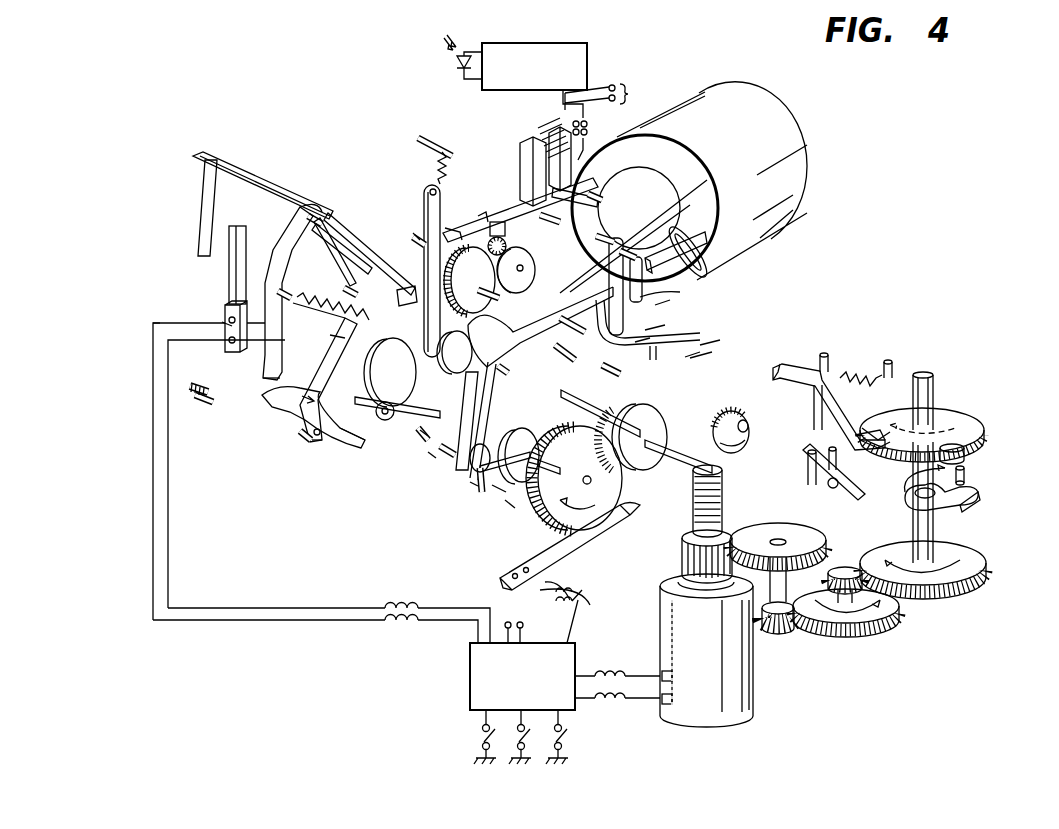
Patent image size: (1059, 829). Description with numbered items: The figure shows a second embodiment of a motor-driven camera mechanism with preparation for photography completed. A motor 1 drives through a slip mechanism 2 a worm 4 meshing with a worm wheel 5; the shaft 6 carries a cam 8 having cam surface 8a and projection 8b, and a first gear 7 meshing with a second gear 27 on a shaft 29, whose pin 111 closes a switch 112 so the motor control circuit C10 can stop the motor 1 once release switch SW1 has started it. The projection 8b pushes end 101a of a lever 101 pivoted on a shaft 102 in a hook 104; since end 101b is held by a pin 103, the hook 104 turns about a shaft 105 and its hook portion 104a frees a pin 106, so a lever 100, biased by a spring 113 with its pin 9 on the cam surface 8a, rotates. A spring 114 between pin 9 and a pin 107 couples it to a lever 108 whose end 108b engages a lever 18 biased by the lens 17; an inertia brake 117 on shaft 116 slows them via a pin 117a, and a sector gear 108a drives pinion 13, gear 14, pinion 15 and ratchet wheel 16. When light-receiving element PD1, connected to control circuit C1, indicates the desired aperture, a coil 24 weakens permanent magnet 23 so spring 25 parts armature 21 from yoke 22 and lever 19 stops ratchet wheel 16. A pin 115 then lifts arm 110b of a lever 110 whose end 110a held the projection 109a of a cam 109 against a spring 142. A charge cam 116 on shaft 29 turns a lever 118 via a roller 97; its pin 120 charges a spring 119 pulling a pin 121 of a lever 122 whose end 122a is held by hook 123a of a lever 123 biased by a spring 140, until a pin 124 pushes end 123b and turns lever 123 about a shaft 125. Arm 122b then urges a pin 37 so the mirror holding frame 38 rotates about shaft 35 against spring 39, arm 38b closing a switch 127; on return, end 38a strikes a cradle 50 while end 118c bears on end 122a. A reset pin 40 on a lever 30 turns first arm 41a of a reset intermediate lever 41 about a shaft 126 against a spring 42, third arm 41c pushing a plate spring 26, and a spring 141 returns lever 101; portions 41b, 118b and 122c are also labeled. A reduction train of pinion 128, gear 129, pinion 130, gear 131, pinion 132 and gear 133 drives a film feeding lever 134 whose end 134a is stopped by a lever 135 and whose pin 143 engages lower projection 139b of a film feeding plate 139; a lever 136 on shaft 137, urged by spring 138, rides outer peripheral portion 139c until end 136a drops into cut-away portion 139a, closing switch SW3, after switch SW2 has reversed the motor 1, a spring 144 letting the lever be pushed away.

The motor 1 is at (755, 690).
The motor flange 2 is at (678, 577).
The worm 4 is at (692, 496).
The cam disc 5 is at (747, 466).
The shaft 6 is at (680, 452).
The gear 7 is at (666, 418).
The shaft 8 is at (585, 396).
The shaft end 8a is at (560, 395).
The lever 8b is at (617, 384).
The frame plate 9 is at (487, 363).
The gear disc 13 is at (527, 280).
The gear 14 is at (466, 266).
The pin 15 is at (469, 256).
The pinion 16 is at (508, 252).
The drum 17 is at (793, 193).
The hook lever 18 is at (707, 227).
The drum hub 19 is at (610, 210).
The bar 21 is at (512, 210).
The magnet block 22 is at (524, 152).
The coil 23 is at (540, 137).
The plate 24 is at (578, 186).
The armature 25 is at (497, 226).
The bracket 26 is at (480, 215).
The bracket arm 27 is at (565, 515).
The gear 29 is at (540, 483).
The pin 30 is at (423, 432).
The pivot pin 35 is at (312, 215).
The lever 37 is at (328, 250).
The lever arm 38 is at (240, 178).
The lever arm 38a is at (398, 282).
The lever arm 38b is at (198, 240).
The pin 39 is at (343, 290).
The pin 40 is at (430, 453).
The pin 41 is at (411, 240).
The shaft 41a is at (403, 408).
The lever 41b is at (428, 185).
The lever end 41c is at (462, 232).
The spring pin 42 is at (425, 157).
The block 50 is at (397, 298).
The collar 97 is at (377, 408).
The member 100 is at (540, 370).
The lever 101 is at (700, 358).
The pin 101a is at (690, 372).
The lever arm 101b is at (640, 297).
The lever 102 is at (640, 342).
The arm 103 is at (660, 305).
The plate 104 is at (707, 180).
The plate arm 104a is at (650, 330).
The pin 105 is at (605, 238).
The pin 106 is at (630, 252).
The lever 107 is at (596, 237).
The pin 108 is at (518, 332).
The pin 108a is at (452, 453).
The arm 108b is at (707, 238).
The member 109 is at (513, 505).
The disc 109a is at (528, 505).
The member 110 is at (450, 470).
The member 110a is at (495, 492).
The pin 110b is at (448, 445).
The shaft 111 is at (612, 471).
The coil leads 112 is at (580, 580).
The pin 113 is at (660, 378).
The arm 114 is at (690, 357).
The member 115 is at (472, 482).
The disc 116 is at (385, 348).
The disc lever 117 is at (445, 333).
The pin 117a is at (527, 353).
The lever 118 is at (335, 363).
The lever end 118b is at (317, 440).
The lever arm 118c is at (340, 308).
The pin 119 is at (278, 288).
The spring 120 is at (333, 338).
The rod 121 is at (228, 274).
The lever 122 is at (265, 240).
The lever tab 122a is at (152, 330).
The lever arm 122b is at (337, 250).
The lever tab 122c is at (223, 323).
The lever 123 is at (227, 407).
The lever tab 123a is at (278, 376).
The lever end 123b is at (280, 438).
The pin 124 is at (302, 442).
The screw 125 is at (210, 403).
The pin 126 is at (413, 233).
The block 127 is at (225, 306).
The gear 128 is at (683, 548).
The gear 129 is at (810, 538).
The pinion 130 is at (782, 633).
The gear 131 is at (873, 645).
The pinion 132 is at (845, 568).
The gear 133 is at (973, 566).
The cam 134 is at (943, 505).
The cam lobe 134a is at (973, 501).
The lever 135 is at (862, 496).
The lever 136 is at (788, 374).
The lever end 136a is at (865, 425).
The pin 137 is at (826, 362).
The spring 138 is at (845, 383).
The disc 139 is at (968, 428).
The notch 139a is at (878, 447).
The boss 139b is at (973, 465).
The shaft 139c is at (960, 408).
The screw 140 is at (190, 388).
The arm 141 is at (700, 345).
The pin 142 is at (478, 474).
The pin 143 is at (970, 480).
The pins 144 is at (823, 477).
The control circuit C1 is at (587, 58).
The motor control circuit C10 is at (624, 90).
The photodiode PD1 is at (458, 62).
The switch SW1 is at (568, 738).
The switch SW2 is at (510, 742).
The switch SW3 is at (482, 740).